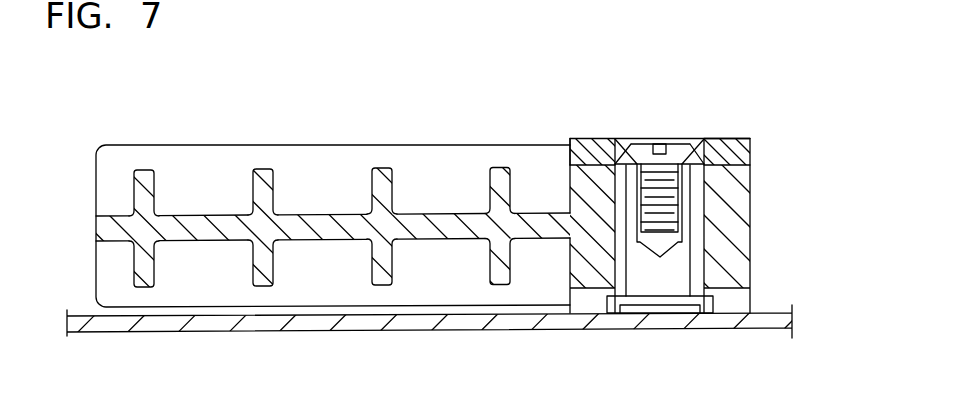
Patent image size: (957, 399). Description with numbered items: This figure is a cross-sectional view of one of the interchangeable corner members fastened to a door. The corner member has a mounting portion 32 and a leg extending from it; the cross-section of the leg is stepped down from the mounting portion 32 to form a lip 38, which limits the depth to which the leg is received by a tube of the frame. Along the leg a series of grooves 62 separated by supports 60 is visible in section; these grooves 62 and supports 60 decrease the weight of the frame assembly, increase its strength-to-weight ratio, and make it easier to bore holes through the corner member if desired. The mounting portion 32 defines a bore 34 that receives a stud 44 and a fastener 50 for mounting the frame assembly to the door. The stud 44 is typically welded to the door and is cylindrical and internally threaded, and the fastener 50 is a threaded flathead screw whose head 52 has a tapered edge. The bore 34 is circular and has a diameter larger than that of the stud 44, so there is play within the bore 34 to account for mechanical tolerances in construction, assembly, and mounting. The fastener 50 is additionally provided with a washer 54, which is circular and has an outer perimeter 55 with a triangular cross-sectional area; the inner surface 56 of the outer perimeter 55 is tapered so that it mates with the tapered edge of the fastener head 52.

The mounting portion 32 is at (745, 261).
The bore 34 is at (703, 230).
The lip 38 is at (570, 138).
The stud 44 is at (667, 267).
The fastener 50 is at (693, 138).
The head 52 is at (643, 145).
The washer 54 is at (722, 153).
The outer perimeter 55 is at (598, 150).
The inner surface 56 is at (615, 164).
The supports 60 is at (144, 169).
The grooves 62 is at (217, 200).